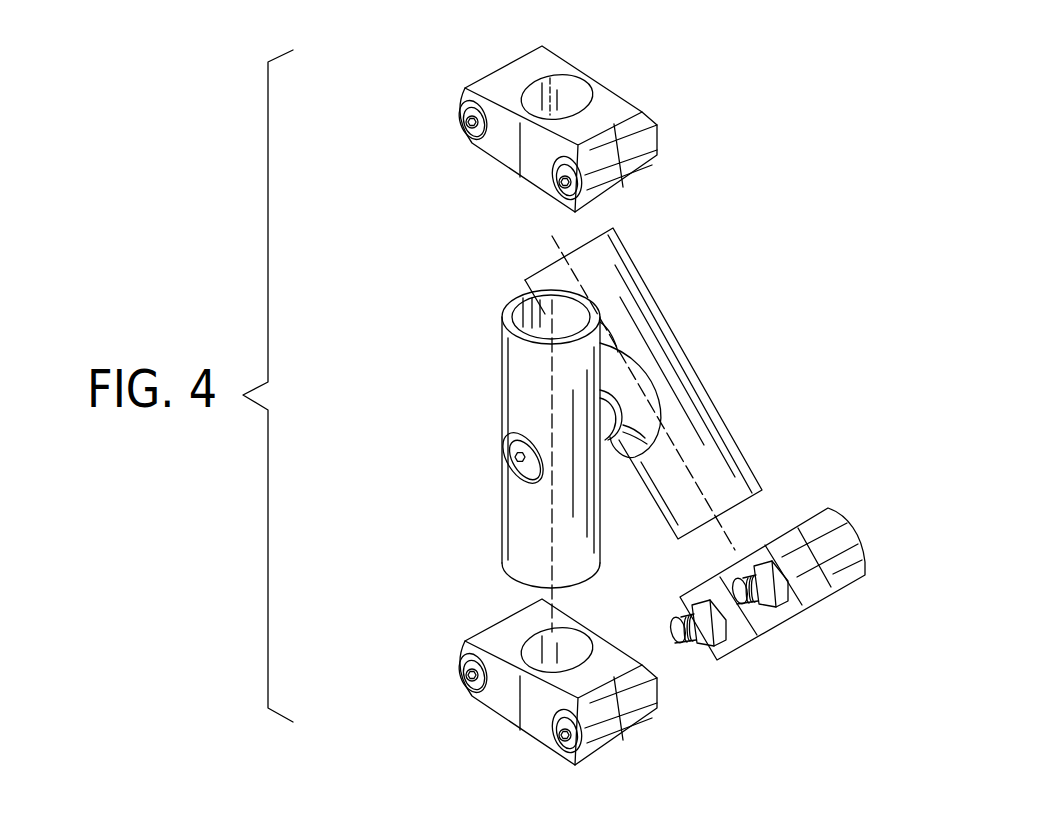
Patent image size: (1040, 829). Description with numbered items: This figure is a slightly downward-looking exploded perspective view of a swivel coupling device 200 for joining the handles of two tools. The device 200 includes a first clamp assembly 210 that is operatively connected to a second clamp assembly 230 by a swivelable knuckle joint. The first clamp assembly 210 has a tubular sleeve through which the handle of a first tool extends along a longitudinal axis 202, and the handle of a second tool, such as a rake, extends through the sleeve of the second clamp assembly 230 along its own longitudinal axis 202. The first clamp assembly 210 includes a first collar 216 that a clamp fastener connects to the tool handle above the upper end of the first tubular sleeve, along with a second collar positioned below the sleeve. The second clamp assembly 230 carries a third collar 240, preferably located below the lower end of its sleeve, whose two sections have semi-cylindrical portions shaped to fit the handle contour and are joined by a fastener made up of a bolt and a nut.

The swivel coupling device 200 is at (453, 200).
The longitudinal axis 202 is at (718, 523).
The first clamp assembly 210 is at (478, 460).
The first collar 216 is at (667, 102).
The second clamp assembly 230 is at (720, 343).
The third collar 240 is at (880, 523).